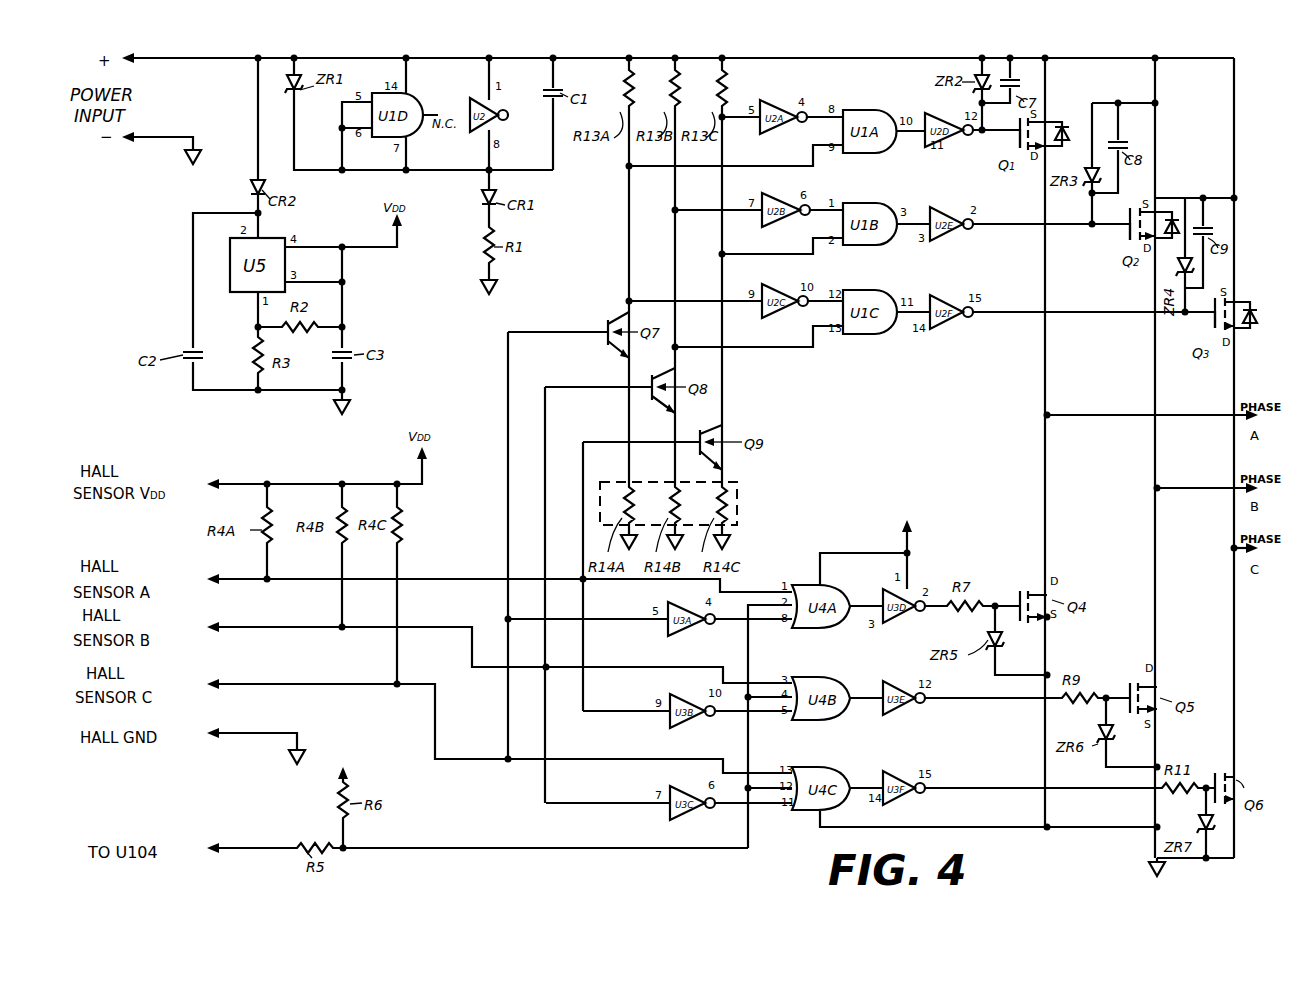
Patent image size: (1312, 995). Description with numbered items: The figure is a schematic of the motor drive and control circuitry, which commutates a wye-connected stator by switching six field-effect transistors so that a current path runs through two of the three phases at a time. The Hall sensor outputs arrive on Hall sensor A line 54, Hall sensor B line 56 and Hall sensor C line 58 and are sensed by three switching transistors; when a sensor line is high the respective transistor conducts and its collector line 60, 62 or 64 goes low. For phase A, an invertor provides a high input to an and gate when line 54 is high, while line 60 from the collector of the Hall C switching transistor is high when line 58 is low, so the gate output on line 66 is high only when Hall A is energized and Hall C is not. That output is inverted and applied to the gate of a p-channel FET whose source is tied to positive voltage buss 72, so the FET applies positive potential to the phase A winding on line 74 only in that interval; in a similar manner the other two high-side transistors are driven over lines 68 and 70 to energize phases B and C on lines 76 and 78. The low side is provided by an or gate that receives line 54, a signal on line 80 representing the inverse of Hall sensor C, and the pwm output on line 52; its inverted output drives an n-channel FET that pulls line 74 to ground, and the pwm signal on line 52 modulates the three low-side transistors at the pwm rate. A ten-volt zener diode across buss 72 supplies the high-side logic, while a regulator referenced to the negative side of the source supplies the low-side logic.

The pwm output line 52 is at (264, 849).
The Hall sensor A line 54 is at (262, 580).
The Hall sensor B line 56 is at (292, 632).
The Hall sensor C line 58 is at (344, 684).
The collector line of transistor Q7 60 is at (629, 265).
The collector line of transistor Q8 62 is at (675, 268).
The collector line of transistor Q9 64 is at (722, 368).
The output line of and gate U1A 66 is at (978, 125).
The gate drive line for transistor Q2 68 is at (1006, 230).
The gate drive line for transistor Q3 70 is at (1001, 326).
The positive voltage buss 72 is at (782, 64).
The phase A line 74 is at (1114, 416).
The phase B line 76 is at (1200, 482).
The phase C line 78 is at (1209, 552).
The inverse Hall sensor C signal line 80 is at (726, 626).